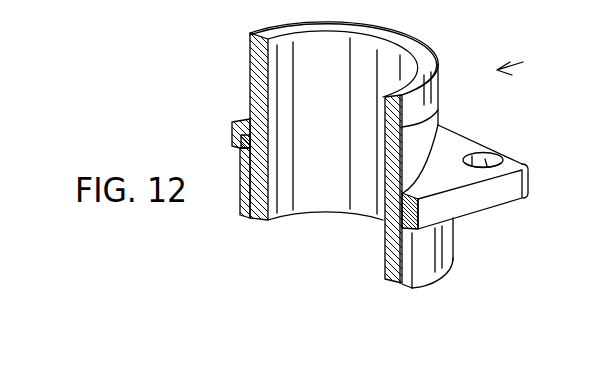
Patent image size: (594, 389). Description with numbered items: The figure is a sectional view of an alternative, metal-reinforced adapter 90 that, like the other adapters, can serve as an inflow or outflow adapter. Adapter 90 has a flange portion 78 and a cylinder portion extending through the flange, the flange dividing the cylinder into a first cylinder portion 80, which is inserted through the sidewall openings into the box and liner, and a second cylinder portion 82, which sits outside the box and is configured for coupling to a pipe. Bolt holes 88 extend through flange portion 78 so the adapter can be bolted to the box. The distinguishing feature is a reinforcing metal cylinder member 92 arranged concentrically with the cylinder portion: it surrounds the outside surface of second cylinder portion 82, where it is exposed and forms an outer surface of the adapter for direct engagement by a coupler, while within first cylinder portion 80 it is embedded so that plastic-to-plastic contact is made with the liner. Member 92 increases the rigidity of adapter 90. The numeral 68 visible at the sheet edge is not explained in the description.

The connector 68 is at (194, 7).
The second cylinder portion 82 is at (380, 50).
The reinforcing metal cylinder member 92 is at (441, 95).
The alternative adapter 90 is at (523, 62).
The bolt holes 88 is at (505, 160).
The flange portion 78 is at (530, 185).
The first cylinder portion 80 is at (452, 247).